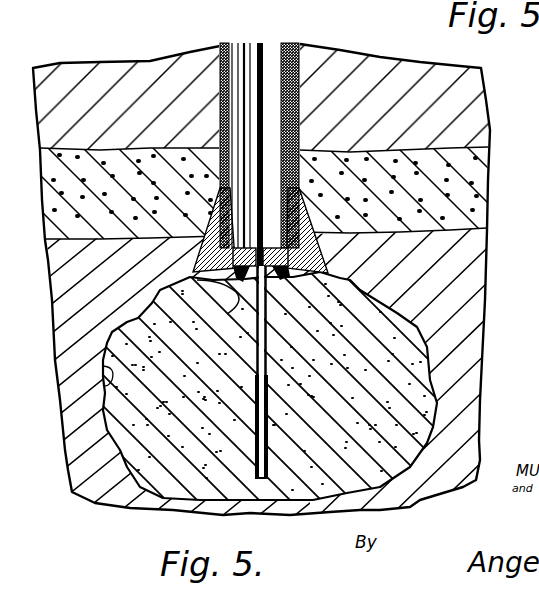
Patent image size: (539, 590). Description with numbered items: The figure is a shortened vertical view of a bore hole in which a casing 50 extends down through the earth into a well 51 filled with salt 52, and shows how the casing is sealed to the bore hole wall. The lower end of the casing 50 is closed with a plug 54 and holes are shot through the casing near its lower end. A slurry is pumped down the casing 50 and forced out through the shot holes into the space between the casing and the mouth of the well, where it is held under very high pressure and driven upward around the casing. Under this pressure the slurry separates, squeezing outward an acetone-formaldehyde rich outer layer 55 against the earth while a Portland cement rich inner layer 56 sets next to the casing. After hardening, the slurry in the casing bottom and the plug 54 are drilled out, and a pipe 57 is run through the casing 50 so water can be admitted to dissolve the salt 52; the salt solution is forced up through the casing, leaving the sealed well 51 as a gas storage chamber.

The casing 50 is at (292, 42).
The well 51 is at (100, 357).
The salt 52 is at (407, 362).
The plug 54 is at (232, 372).
The acetone-formaldehyde rich outer layer 55 is at (303, 206).
The Portland cement rich inner layer 56 is at (269, 387).
The pipe 57 is at (260, 44).